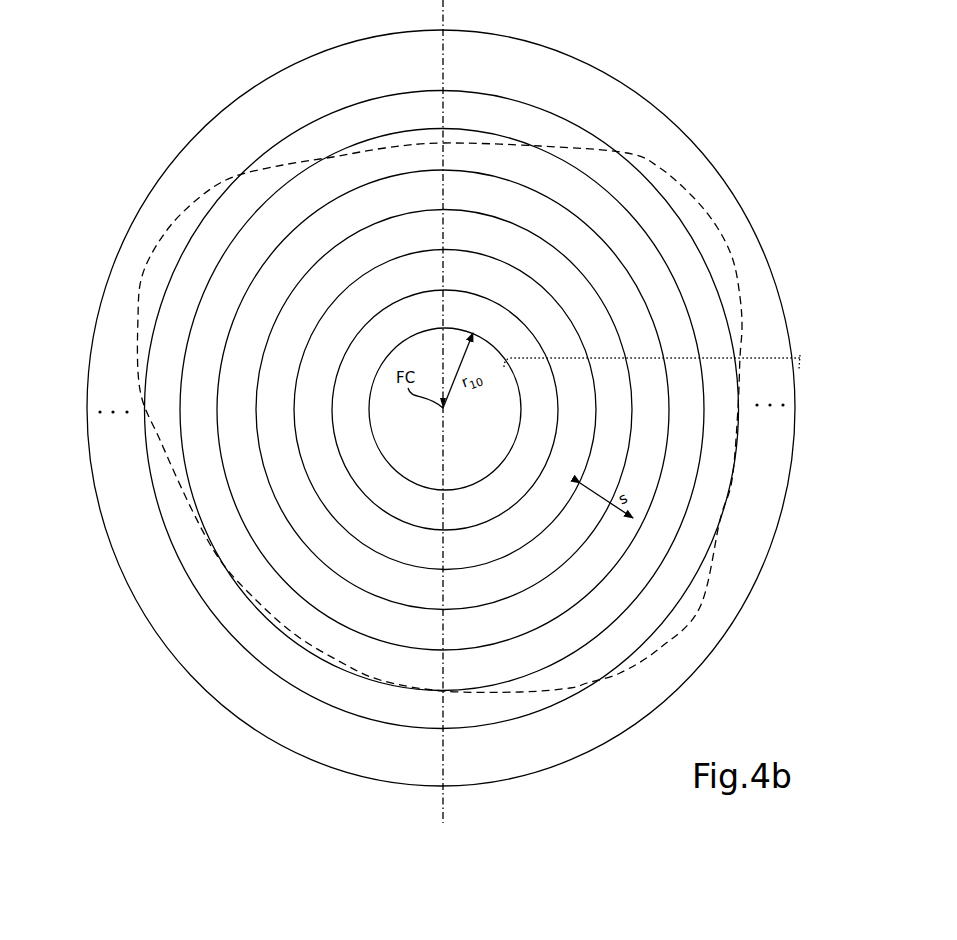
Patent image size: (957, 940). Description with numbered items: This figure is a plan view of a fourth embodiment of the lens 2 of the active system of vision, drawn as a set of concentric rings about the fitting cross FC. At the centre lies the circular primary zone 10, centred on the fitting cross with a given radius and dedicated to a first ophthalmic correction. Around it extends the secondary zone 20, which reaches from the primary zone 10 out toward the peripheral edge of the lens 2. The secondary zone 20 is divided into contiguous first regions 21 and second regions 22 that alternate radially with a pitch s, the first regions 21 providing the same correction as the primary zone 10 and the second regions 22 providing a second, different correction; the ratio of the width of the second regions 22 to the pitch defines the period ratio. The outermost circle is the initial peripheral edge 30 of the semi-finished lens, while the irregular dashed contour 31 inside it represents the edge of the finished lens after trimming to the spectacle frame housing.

The lens 2 is at (194, 86).
The primary zone 10 is at (420, 443).
The secondary zone 20 is at (647, 358).
The first regions 21 is at (585, 418).
The second regions 22 is at (548, 418).
The initial peripheral edge 30 is at (753, 213).
The contour 31 is at (688, 180).